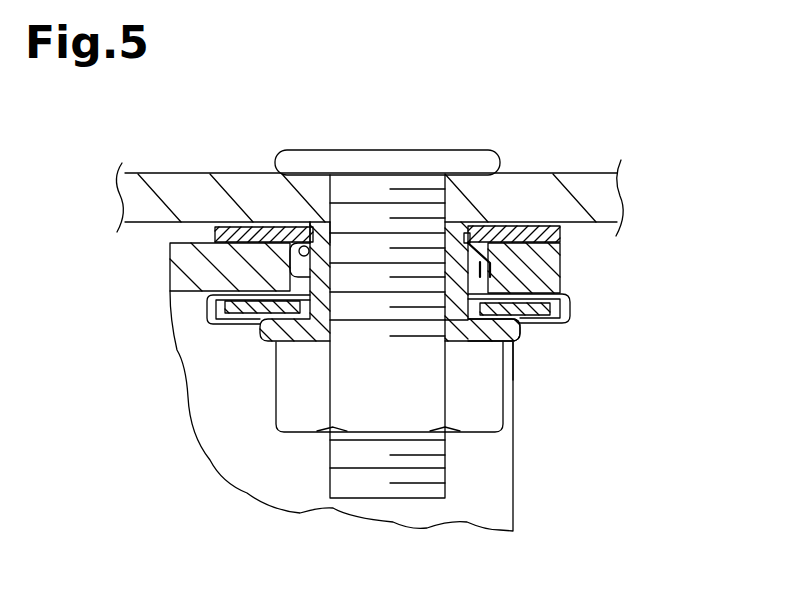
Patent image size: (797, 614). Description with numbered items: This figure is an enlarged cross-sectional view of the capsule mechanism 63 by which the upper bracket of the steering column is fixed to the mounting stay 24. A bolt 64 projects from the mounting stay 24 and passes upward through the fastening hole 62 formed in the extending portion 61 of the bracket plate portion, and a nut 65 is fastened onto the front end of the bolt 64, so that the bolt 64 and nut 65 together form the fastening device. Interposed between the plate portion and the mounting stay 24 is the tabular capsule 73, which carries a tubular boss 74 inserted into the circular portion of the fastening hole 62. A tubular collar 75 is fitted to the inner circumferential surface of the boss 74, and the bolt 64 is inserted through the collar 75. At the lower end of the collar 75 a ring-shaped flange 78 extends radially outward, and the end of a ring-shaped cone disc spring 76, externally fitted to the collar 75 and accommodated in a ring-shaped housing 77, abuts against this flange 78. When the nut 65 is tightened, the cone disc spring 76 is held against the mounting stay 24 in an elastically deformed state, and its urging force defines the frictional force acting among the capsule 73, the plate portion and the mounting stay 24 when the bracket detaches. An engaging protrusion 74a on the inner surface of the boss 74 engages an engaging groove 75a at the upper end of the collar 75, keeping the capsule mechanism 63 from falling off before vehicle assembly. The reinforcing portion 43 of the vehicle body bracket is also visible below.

The mounting stay 24 is at (189, 187).
The reinforcing portion 43 is at (506, 505).
The extending portion 61 is at (183, 263).
The fastening hole 62 is at (272, 226).
The capsule mechanism 63 is at (671, 157).
The bolt 64 is at (370, 158).
The nut 65 is at (290, 385).
The capsule 73 is at (556, 231).
The boss 74 is at (492, 252).
The engaging protrusion 74a is at (320, 225).
The collar 75 is at (513, 345).
The engaging groove 75a is at (473, 227).
The cone disc spring 76 is at (512, 331).
The housing 77 is at (572, 311).
The flange 78 is at (476, 333).